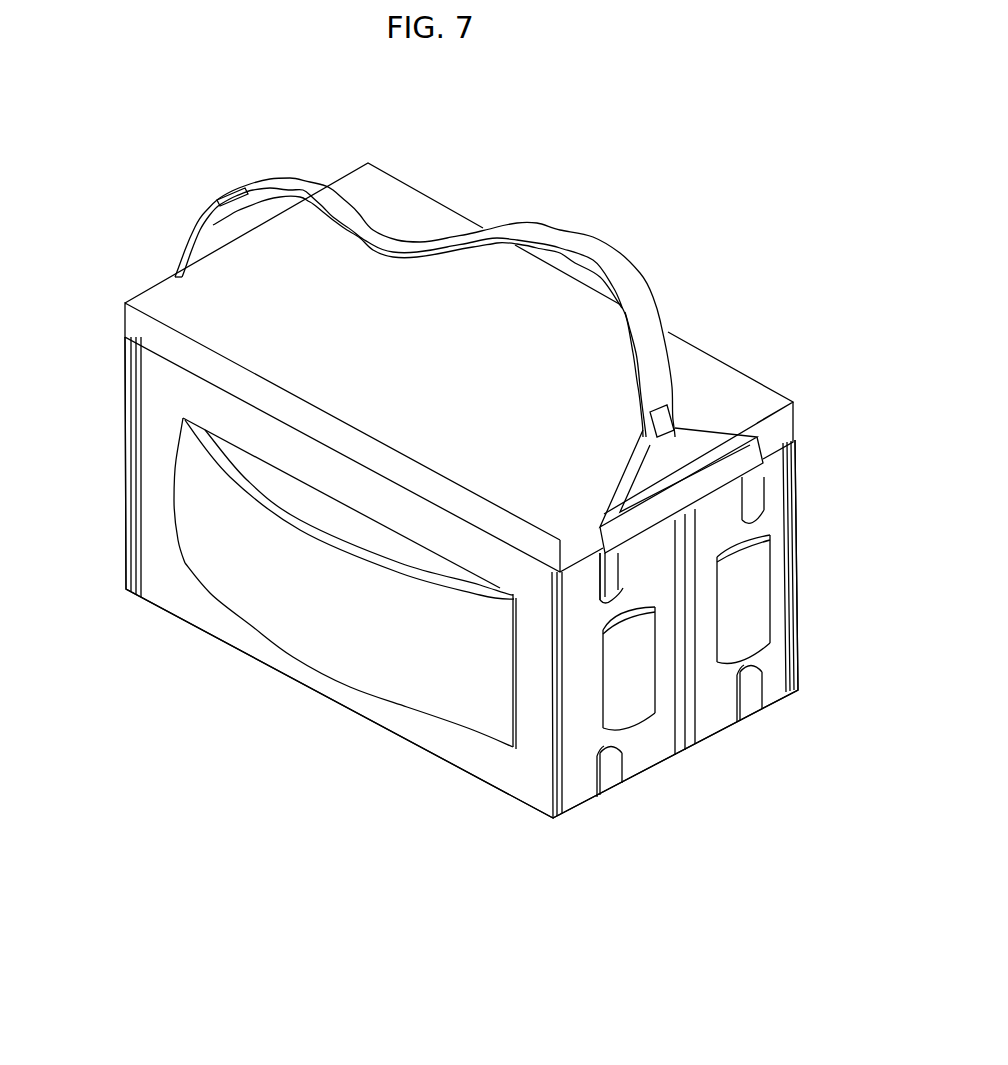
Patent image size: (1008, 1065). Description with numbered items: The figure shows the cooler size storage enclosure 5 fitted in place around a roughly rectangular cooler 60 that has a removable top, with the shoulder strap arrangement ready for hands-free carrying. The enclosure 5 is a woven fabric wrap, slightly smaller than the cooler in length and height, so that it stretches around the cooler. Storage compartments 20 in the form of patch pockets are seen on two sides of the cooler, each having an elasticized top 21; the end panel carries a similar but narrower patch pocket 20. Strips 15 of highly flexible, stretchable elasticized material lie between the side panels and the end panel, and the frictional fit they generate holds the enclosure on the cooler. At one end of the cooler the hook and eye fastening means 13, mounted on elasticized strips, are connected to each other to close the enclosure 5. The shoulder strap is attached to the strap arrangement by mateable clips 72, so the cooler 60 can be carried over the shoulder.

The cooler size storage enclosure 5 is at (332, 708).
The hook and eye fastening means 13 is at (688, 752).
The strips of stretchable elasticized material 15 is at (125, 590).
The storage compartments 20 is at (328, 617).
The elasticized top 21 is at (247, 463).
The cooler 60 is at (728, 363).
The mateable clips 72 is at (232, 192).